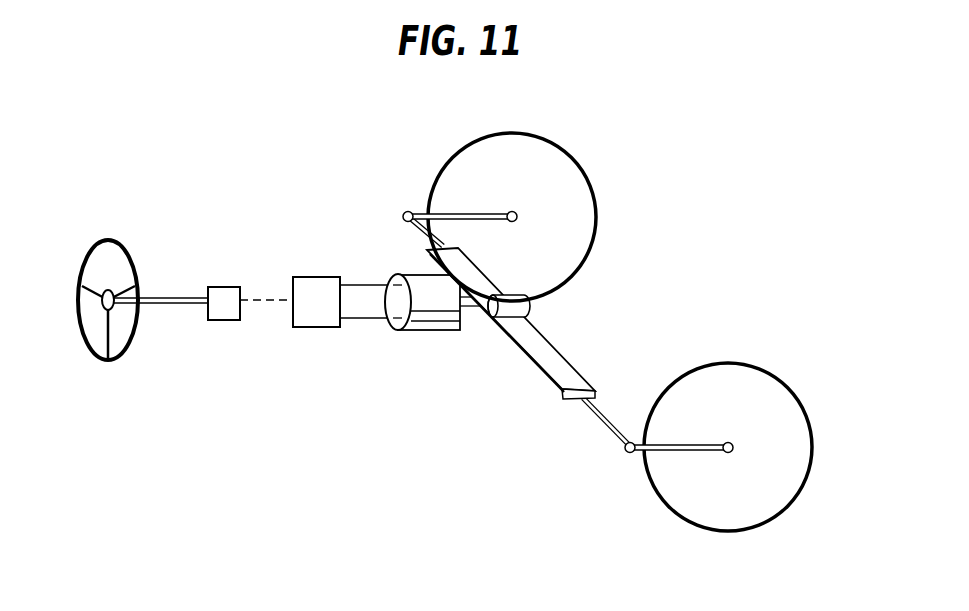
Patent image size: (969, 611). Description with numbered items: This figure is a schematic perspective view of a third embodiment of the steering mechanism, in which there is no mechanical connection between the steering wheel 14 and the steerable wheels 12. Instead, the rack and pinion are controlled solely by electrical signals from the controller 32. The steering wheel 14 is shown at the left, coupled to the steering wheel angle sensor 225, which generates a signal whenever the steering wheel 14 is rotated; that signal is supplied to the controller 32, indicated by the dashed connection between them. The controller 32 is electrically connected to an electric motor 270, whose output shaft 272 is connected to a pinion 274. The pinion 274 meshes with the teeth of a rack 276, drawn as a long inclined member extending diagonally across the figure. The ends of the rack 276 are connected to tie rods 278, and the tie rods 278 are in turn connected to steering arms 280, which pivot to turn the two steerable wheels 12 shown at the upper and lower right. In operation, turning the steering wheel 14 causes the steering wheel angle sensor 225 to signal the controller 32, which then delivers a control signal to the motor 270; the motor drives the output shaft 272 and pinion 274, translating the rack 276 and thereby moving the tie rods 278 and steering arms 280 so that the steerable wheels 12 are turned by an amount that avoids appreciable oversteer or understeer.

The steerable wheels 12 is at (590, 182).
The steering wheel 14 is at (137, 265).
The controller 32 is at (320, 328).
The steering wheel angle sensor 225 is at (236, 288).
The electric motor 270 is at (420, 332).
The output shaft 272 is at (472, 308).
The pinion 274 is at (520, 306).
The rack 276 is at (570, 377).
The tie rods 278 is at (423, 233).
The steering arms 280 is at (477, 212).